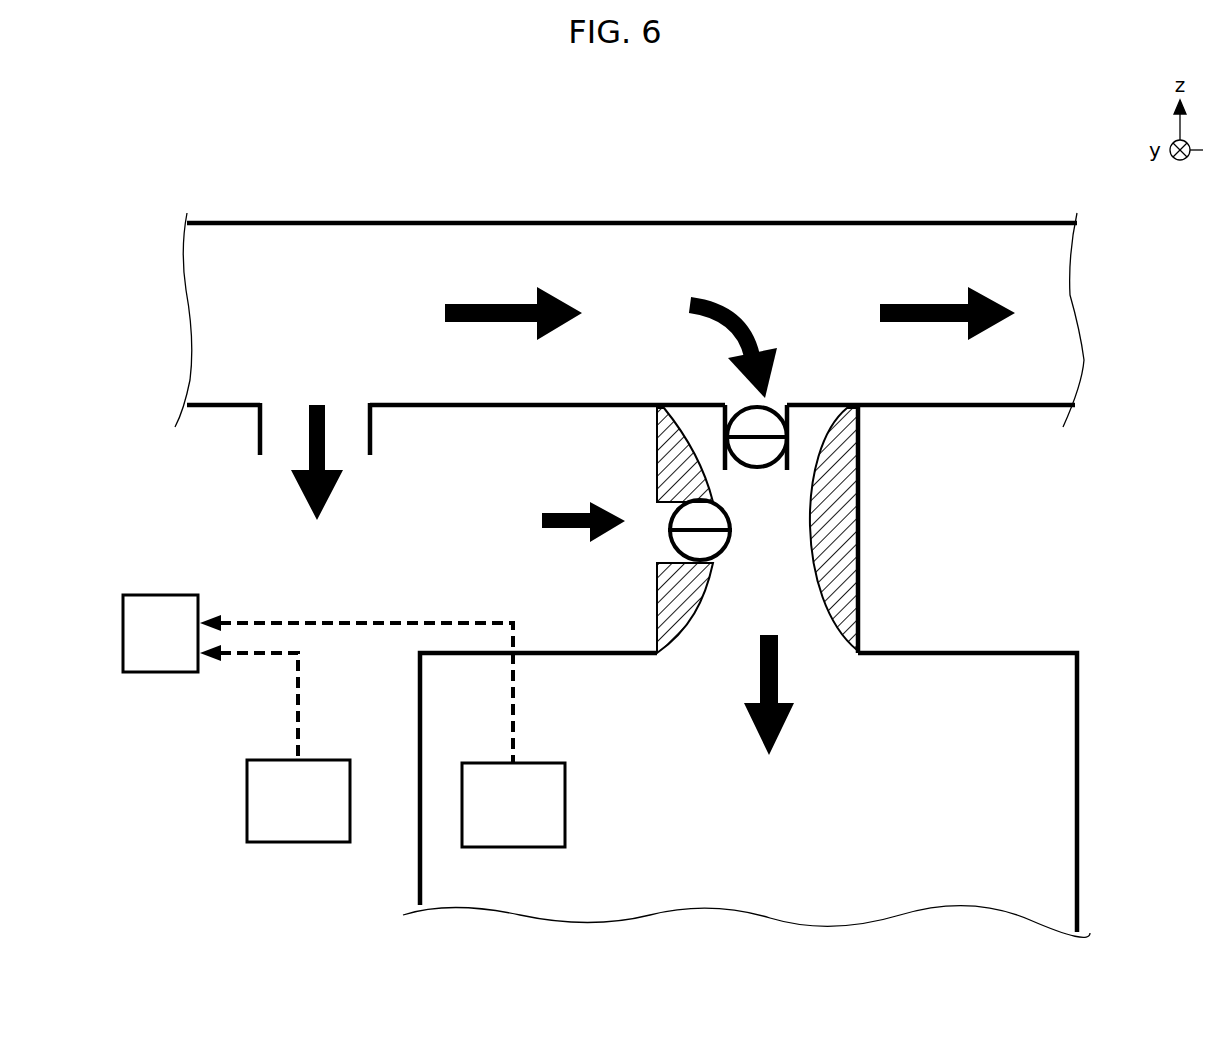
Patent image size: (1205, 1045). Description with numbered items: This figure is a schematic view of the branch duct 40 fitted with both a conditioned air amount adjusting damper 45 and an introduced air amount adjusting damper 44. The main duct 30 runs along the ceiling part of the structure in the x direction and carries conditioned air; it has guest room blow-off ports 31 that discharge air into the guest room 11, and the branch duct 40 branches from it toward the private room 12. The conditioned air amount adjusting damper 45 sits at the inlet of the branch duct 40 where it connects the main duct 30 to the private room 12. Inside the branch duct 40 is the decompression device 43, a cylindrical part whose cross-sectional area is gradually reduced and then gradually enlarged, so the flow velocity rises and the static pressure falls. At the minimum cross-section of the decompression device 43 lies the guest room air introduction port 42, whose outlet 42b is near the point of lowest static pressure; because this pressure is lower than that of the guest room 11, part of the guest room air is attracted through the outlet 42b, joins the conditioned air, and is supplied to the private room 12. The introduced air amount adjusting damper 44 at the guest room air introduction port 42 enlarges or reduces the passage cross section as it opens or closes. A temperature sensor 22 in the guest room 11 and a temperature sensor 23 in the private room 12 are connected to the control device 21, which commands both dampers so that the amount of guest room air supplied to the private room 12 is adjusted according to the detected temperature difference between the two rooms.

The guest room 11 is at (377, 891).
The private room 12 is at (935, 891).
The control device 21 is at (147, 646).
The temperature sensor 22 is at (285, 814).
The temperature sensor 23 is at (500, 819).
The main duct 30 is at (243, 281).
The guest room blow-off port 31 is at (282, 445).
The branch duct 40 is at (797, 485).
The guest room air introduction port 42 is at (658, 550).
The outlet of the guest room air introduction port 42b is at (727, 562).
The decompression device 43 is at (657, 480).
The introduced air amount adjusting damper 44 is at (670, 523).
The conditioned air amount adjusting damper 45 is at (750, 413).